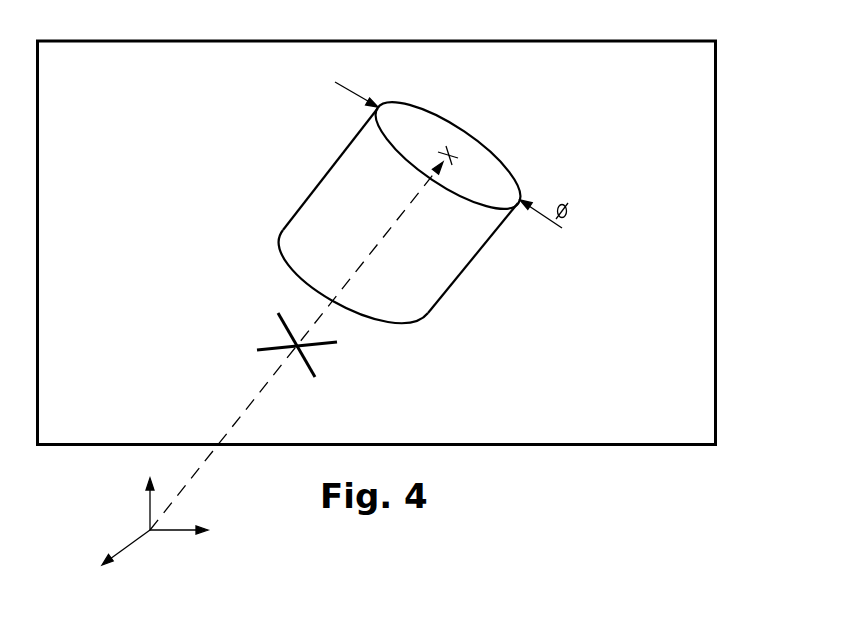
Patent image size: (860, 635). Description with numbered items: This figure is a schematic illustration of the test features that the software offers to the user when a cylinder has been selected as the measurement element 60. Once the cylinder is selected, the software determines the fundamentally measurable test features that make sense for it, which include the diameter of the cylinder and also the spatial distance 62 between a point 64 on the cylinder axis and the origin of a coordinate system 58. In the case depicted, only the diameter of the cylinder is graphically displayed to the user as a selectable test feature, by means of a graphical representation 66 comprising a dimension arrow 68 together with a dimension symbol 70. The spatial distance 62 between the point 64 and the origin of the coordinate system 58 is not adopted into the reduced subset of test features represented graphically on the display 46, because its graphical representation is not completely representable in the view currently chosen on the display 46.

The display 46 is at (700, 322).
The coordinate system 58 is at (150, 533).
The measurement element 60 is at (438, 300).
The spatial distance 62 is at (252, 400).
The point 64 is at (452, 150).
The graphical representation 66 is at (562, 232).
The dimension arrow 68 is at (343, 88).
The dimension symbol 70 is at (562, 201).